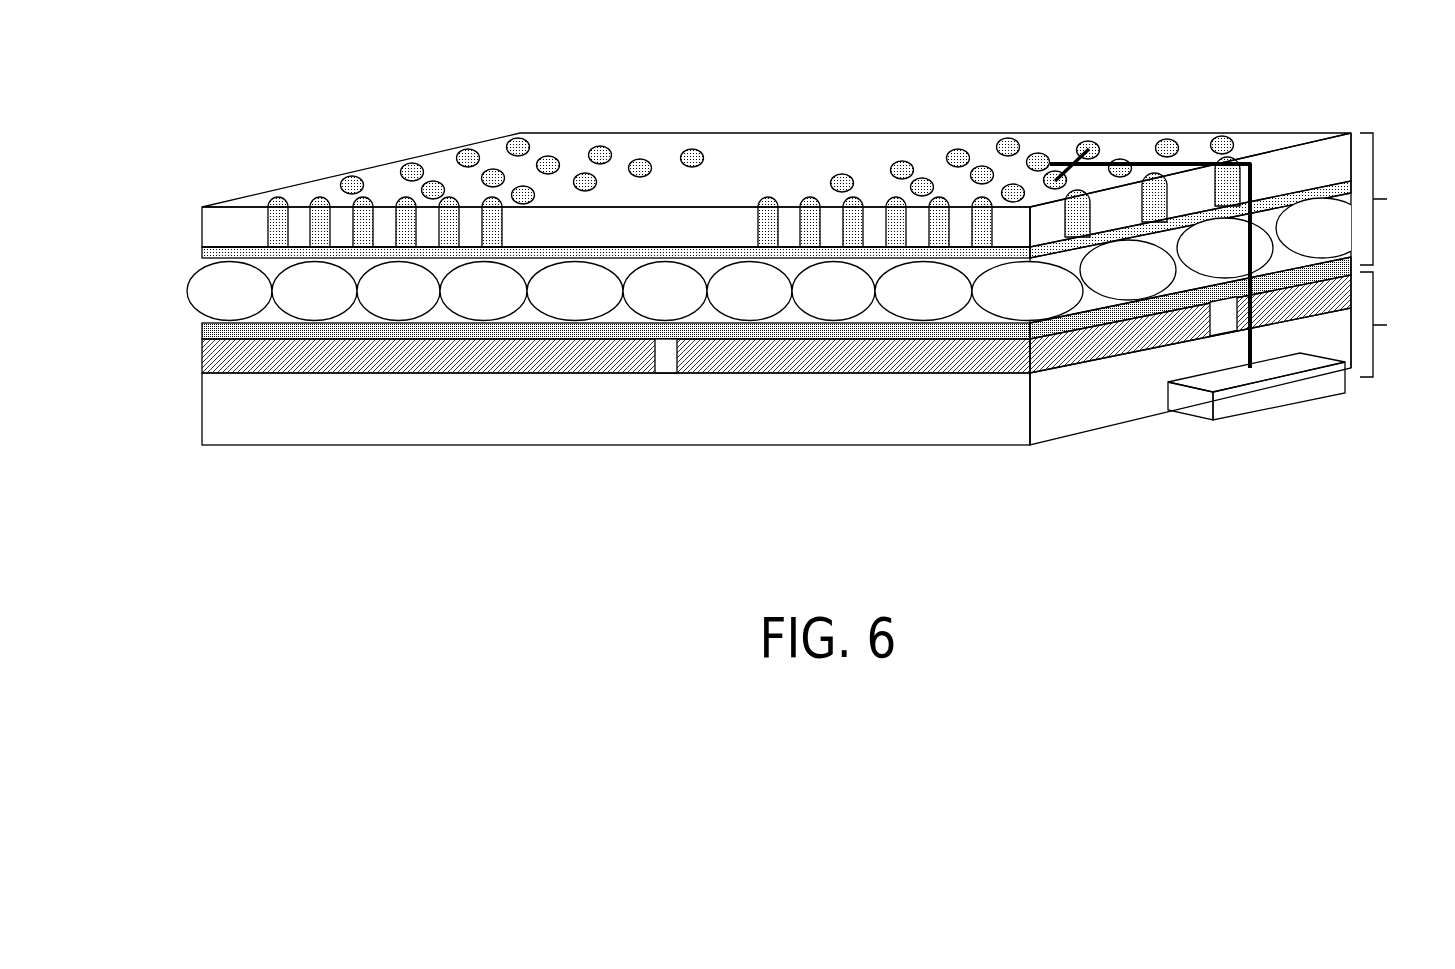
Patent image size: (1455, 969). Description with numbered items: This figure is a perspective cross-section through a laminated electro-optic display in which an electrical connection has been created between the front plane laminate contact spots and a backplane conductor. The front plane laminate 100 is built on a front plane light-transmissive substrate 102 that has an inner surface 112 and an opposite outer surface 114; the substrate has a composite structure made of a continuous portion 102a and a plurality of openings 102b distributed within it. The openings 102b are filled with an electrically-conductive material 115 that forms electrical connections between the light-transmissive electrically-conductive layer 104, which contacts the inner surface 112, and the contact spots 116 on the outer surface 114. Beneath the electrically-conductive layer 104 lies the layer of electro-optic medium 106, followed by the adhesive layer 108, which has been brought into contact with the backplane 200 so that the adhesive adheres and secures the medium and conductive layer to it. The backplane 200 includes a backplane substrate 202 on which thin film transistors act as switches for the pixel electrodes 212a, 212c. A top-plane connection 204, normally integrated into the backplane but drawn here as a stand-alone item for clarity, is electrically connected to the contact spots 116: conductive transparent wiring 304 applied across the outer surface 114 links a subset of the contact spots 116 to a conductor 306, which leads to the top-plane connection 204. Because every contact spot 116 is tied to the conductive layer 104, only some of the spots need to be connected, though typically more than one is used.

The front plane laminate 100 is at (1398, 199).
The front plane light-transmissive substrate 102 is at (575, 242).
The continuous portion 102a is at (225, 222).
The openings 102b is at (282, 221).
The light-transmissive electrically-conductive layer 104 is at (200, 253).
The layer of electro-optic medium 106 is at (218, 294).
The adhesive layer 108 is at (200, 333).
The inner surface 112 is at (726, 246).
The outer surface 114 is at (788, 168).
The electrically-conductive material 115 is at (318, 197).
The contact spots 116 is at (466, 150).
The backplane 200 is at (1399, 324).
The backplane substrate 202 is at (592, 428).
The top-plane connection 204 is at (1268, 398).
The pixel electrode 212a is at (985, 383).
The pixel electrode 212c is at (215, 365).
The conductive transparent wiring 304 is at (1140, 163).
The conductor 306 is at (1252, 337).